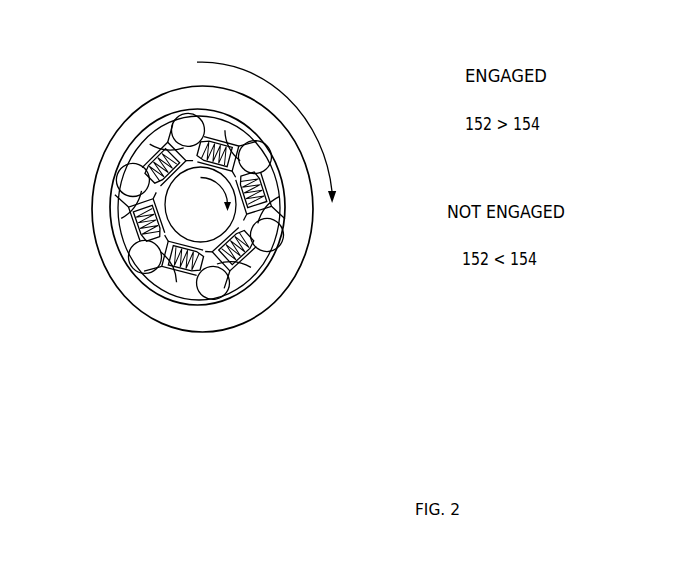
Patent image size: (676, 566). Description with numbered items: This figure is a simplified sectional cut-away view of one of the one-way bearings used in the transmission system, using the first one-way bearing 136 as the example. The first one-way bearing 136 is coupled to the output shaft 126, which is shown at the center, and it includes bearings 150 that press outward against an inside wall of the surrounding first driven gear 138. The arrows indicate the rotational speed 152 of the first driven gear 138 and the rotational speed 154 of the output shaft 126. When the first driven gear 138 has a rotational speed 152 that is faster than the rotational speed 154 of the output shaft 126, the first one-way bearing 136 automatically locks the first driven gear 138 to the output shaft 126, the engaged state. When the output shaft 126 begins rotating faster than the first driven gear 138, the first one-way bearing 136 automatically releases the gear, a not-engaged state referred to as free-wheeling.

The output shaft 126 is at (214, 243).
The first one-way bearing 136 is at (148, 142).
The first driven gear 138 is at (93, 184).
The bearings 150 is at (178, 112).
The rotational speed 152 is at (241, 70).
The rotational speed 154 is at (222, 193).